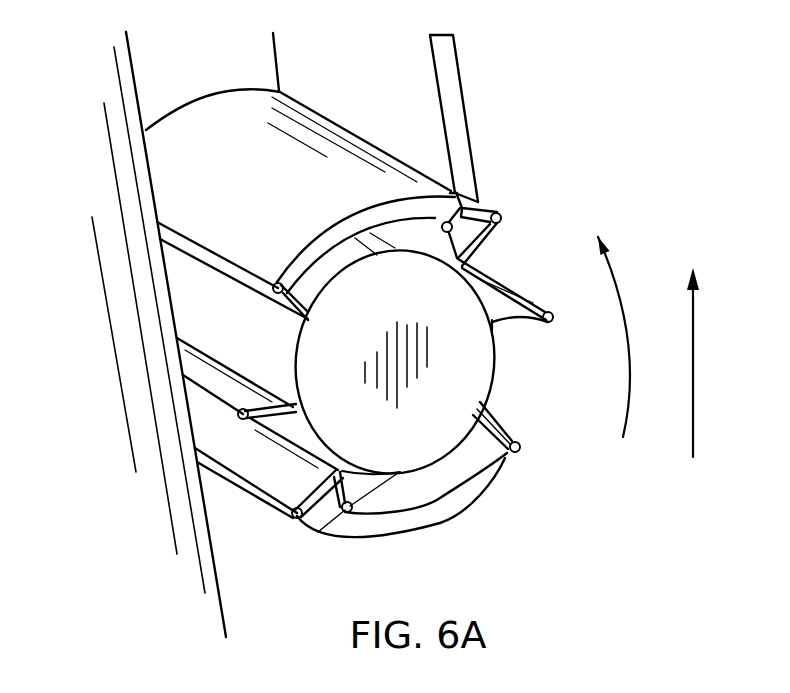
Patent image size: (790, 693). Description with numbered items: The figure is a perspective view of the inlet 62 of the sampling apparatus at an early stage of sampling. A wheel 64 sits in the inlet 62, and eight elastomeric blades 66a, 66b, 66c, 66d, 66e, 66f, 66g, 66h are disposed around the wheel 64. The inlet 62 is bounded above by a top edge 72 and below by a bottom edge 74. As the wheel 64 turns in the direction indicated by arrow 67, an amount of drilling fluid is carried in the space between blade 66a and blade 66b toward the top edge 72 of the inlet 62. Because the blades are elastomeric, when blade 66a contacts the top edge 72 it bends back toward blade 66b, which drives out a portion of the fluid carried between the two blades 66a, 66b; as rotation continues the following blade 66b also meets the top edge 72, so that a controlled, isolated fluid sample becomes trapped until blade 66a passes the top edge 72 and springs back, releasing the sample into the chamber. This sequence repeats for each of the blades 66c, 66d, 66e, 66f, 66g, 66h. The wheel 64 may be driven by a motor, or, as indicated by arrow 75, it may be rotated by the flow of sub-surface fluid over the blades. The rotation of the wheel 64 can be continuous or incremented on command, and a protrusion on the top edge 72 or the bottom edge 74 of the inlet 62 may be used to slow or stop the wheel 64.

The inlet 62 is at (478, 201).
The wheel 64 is at (436, 433).
The blade 66a is at (501, 215).
The blade 66b is at (551, 323).
The blade 66c is at (522, 448).
The blade 66d is at (348, 514).
The blade 66e is at (292, 519).
The blade 66f is at (240, 421).
The blade 66g is at (277, 280).
The blade 66h is at (446, 221).
The arrow 67 is at (610, 337).
The top edge 72 is at (352, 221).
The bottom edge 74 is at (467, 512).
The arrow 75 is at (694, 349).